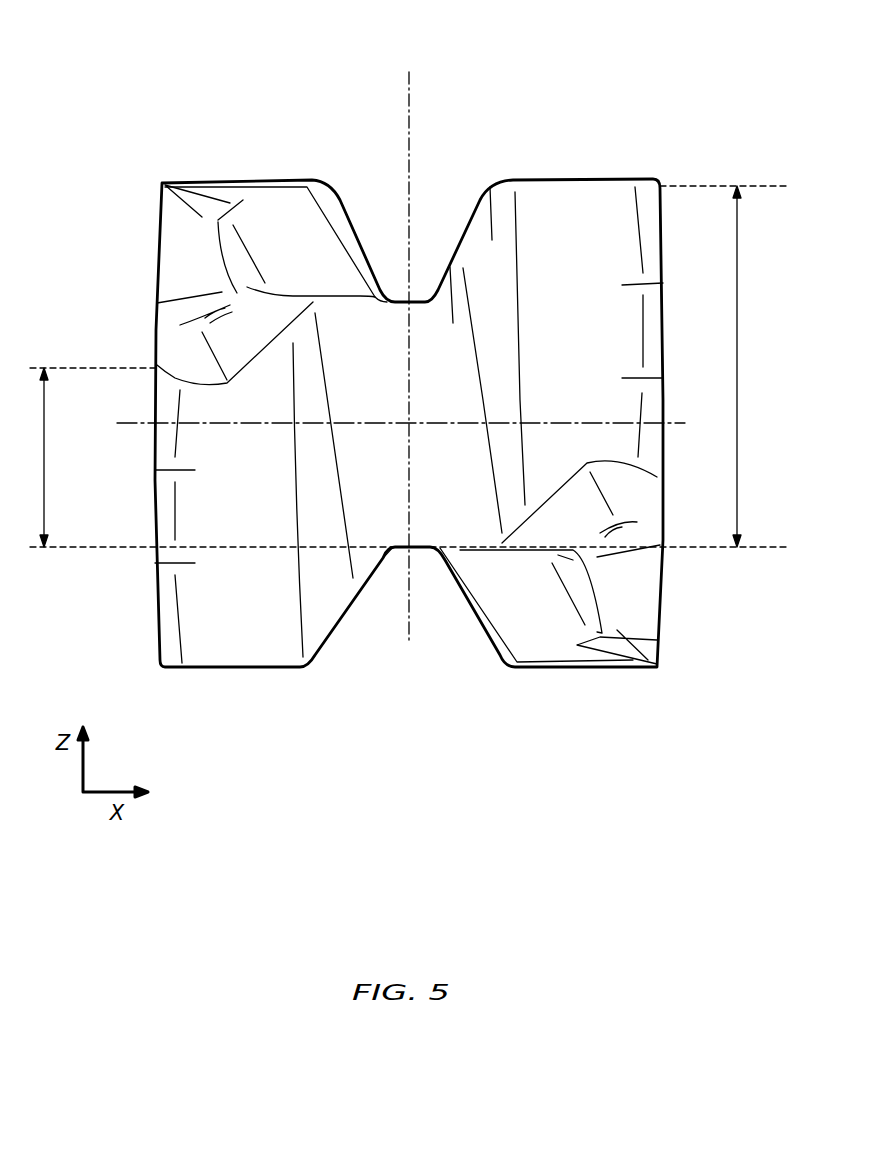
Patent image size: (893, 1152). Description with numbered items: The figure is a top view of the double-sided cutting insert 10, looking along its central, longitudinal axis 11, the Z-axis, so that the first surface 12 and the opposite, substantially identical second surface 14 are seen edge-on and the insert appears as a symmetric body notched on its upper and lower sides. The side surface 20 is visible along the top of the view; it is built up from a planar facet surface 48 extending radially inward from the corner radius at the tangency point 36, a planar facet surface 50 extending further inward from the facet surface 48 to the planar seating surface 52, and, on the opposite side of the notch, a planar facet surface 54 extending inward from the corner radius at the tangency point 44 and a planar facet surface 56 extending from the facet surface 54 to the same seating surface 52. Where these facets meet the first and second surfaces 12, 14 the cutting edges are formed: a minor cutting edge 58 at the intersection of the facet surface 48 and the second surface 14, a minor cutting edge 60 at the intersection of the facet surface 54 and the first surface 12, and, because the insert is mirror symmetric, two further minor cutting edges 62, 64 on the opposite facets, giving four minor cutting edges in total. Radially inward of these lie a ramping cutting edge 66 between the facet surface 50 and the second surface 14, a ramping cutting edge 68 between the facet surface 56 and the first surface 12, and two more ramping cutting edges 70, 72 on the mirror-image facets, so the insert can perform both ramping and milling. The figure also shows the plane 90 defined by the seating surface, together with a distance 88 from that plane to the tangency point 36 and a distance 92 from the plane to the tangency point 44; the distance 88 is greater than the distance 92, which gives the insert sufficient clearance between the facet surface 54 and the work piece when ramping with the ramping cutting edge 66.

The cutting insert 10 is at (62, 130).
The central, longitudinal axis 11 is at (408, 105).
The first surface 12 is at (438, 683).
The second surface 14 is at (356, 128).
The side surface 20 is at (433, 350).
The tangency point 36 is at (660, 168).
The tangency point 44 is at (150, 358).
The planar facet surface 48 is at (572, 217).
The planar facet surface 50 is at (497, 190).
The planar seating surface 52 is at (453, 323).
The planar facet surface 54 is at (232, 632).
The planar facet surface 56 is at (320, 610).
The minor cutting edge 58 is at (582, 178).
The minor cutting edge 60 is at (203, 670).
The minor cutting edge 62 is at (557, 672).
The minor cutting edge 64 is at (232, 178).
The ramping cutting edge 66 is at (475, 210).
The ramping cutting edge 68 is at (347, 610).
The ramping cutting edge 70 is at (475, 625).
The ramping cutting edge 72 is at (357, 247).
The distance 88 is at (725, 366).
The plane 90 is at (690, 550).
The distance 92 is at (92, 457).